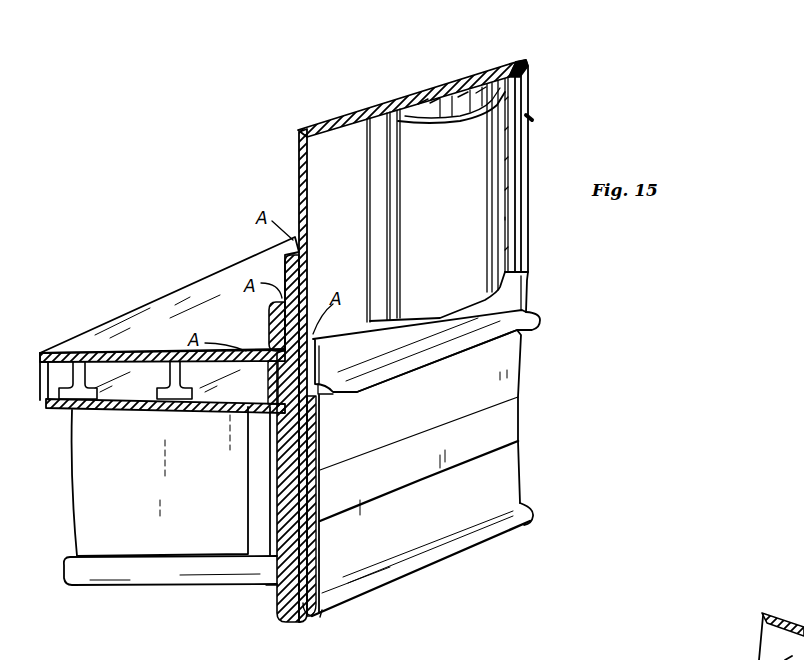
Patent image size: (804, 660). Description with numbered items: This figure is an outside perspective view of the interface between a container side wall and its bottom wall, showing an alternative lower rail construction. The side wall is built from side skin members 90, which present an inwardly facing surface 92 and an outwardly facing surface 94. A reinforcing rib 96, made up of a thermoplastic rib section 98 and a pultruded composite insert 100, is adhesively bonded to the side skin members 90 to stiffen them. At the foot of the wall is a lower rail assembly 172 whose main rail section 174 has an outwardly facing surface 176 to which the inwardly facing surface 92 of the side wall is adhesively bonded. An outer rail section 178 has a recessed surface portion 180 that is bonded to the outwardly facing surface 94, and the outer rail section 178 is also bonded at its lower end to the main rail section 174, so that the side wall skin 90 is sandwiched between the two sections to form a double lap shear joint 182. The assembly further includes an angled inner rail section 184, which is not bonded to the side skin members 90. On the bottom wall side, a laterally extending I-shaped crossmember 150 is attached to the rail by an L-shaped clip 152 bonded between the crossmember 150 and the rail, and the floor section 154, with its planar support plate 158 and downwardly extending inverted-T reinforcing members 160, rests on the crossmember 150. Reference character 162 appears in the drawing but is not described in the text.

The side skin member 90 is at (349, 118).
The inwardly facing surface 92 is at (298, 155).
The outwardly facing surface 94 is at (413, 200).
The reinforcing rib 96 is at (529, 118).
The rib section 98 is at (395, 117).
The pultruded composite insert 100 is at (462, 103).
The crossmember 150 is at (167, 587).
The L-shaped clip 152 is at (253, 477).
The floor section 154 is at (118, 313).
The support plate 158 is at (178, 300).
The reinforcing member 160 is at (174, 407).
The joint 162 is at (268, 595).
The lower rail assembly 172 is at (568, 456).
The main rail section 174 is at (526, 399).
The outwardly facing surface 176 is at (299, 286).
The outer rail section 178 is at (528, 283).
The recessed surface portion 180 is at (319, 421).
The double lap shear joint 182 is at (327, 355).
The angled inner rail section 184 is at (267, 315).